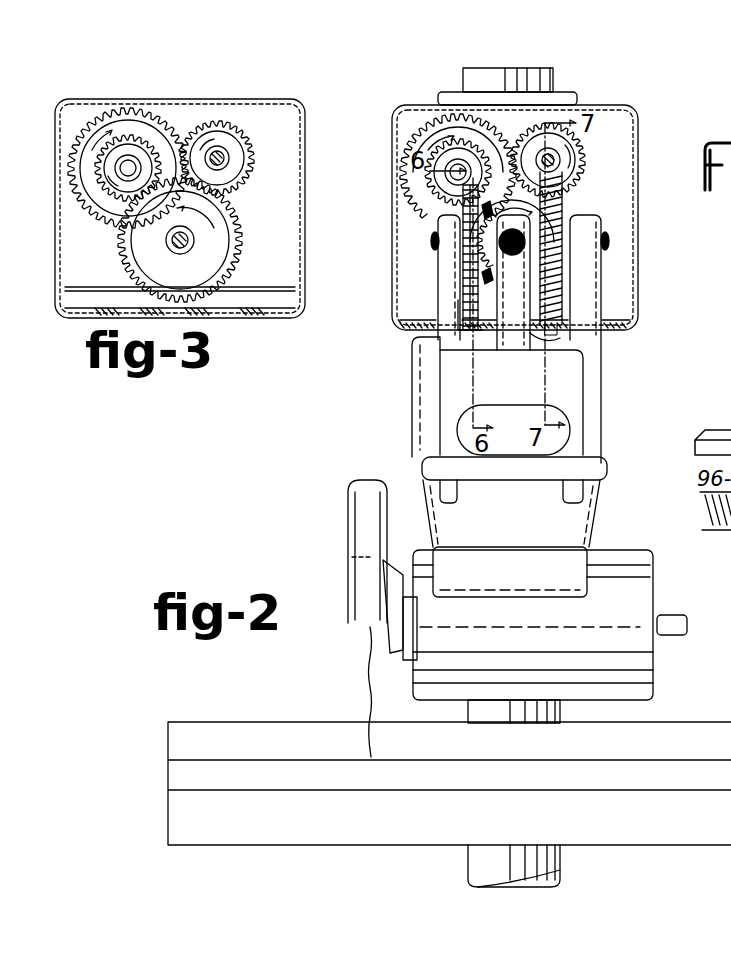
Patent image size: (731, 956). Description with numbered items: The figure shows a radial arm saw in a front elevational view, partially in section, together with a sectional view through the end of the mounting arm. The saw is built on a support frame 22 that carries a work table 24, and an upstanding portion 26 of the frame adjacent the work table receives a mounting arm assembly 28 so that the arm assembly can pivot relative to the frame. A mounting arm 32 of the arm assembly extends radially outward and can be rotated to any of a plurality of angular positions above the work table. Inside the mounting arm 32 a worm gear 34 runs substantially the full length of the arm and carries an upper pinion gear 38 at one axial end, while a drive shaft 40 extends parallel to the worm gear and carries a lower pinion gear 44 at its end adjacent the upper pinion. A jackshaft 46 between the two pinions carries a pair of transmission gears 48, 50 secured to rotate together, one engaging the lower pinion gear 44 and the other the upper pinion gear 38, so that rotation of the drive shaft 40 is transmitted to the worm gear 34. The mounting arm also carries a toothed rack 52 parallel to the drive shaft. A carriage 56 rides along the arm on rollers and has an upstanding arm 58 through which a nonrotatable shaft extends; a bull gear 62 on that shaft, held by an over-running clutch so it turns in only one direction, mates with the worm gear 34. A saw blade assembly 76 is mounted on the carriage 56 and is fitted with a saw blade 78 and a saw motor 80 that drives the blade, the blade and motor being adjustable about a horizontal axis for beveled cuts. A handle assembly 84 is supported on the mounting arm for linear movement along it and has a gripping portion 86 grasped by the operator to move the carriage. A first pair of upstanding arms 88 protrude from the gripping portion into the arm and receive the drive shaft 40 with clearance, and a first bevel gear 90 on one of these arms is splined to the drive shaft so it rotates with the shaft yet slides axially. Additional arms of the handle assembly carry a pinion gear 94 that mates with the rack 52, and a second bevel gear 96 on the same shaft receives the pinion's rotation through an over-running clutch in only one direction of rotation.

In FIG. 2, the support frame 22 is at (461, 861).
In FIG. 2, the work table 24 is at (262, 714).
In FIG. 2, the upstanding portion 26 is at (560, 712).
In FIG. 2, the mounting arm assembly 28 is at (575, 95).
In FIG. 3, the mounting arm 32 is at (278, 110).
In FIG. 2, the mounting arm 32 is at (625, 118).
In FIG. 3, the worm gear 34 is at (229, 159).
In FIG. 2, the worm gear 34 is at (570, 140).
In FIG. 3, the upper pinion gear 38 is at (235, 140).
In FIG. 2, the upper pinion gear 38 is at (578, 176).
In FIG. 3, the drive shaft 40 is at (186, 248).
In FIG. 2, the drive shaft 40 is at (522, 243).
In FIG. 3, the lower pinion gear 44 is at (223, 240).
In FIG. 2, the lower pinion gear 44 is at (532, 260).
In FIG. 3, the jackshaft 46 is at (134, 156).
In FIG. 2, the jackshaft 46 is at (418, 213).
In FIG. 3, the transmission gear 48 is at (172, 122).
In FIG. 2, the transmission gear 48 is at (494, 127).
In FIG. 3, the transmission gear 50 is at (125, 114).
In FIG. 2, the transmission gear 50 is at (420, 193).
In FIG. 2, the toothed rack 52 is at (511, 299).
In FIG. 2, the carriage 56 is at (617, 346).
In FIG. 2, the upstanding arm 58 is at (600, 310).
In FIG. 2, the bull gear 62 is at (566, 198).
In FIG. 2, the saw blade assembly 76 is at (626, 544).
In FIG. 2, the saw blade 78 is at (367, 683).
In FIG. 2, the saw motor 80 is at (575, 622).
In FIG. 2, the handle assembly 84 is at (427, 400).
In FIG. 2, the gripping portion 86 is at (510, 478).
In FIG. 2, the first pair of upstanding arms 88 is at (536, 334).
In FIG. 2, the first bevel gear 90 is at (462, 260).
In FIG. 2, the pinion gear 94 is at (457, 292).
In FIG. 2, the second bevel gear 96 is at (463, 273).